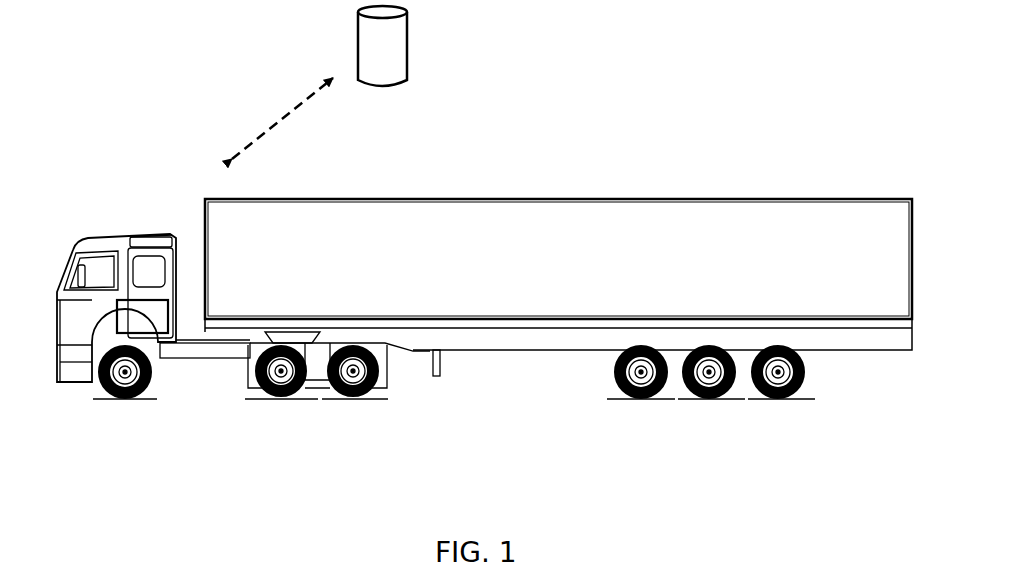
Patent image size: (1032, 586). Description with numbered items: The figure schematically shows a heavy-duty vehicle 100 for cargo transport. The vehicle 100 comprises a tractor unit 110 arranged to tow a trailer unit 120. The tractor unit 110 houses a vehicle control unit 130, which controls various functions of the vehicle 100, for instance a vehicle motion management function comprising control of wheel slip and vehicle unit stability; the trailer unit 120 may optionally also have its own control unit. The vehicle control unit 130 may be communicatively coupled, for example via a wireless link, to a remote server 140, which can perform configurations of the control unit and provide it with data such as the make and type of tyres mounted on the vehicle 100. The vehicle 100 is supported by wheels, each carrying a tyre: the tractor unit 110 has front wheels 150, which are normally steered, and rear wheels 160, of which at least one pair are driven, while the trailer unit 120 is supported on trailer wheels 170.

The heavy-duty vehicle 100 is at (93, 142).
The tractor unit 110 is at (93, 238).
The trailer unit 120 is at (395, 199).
The vehicle control unit 130 is at (142, 316).
The remote server 140 is at (408, 57).
The front wheels 150 is at (99, 410).
The rear wheels 160 is at (283, 410).
The trailer wheels 170 is at (772, 422).